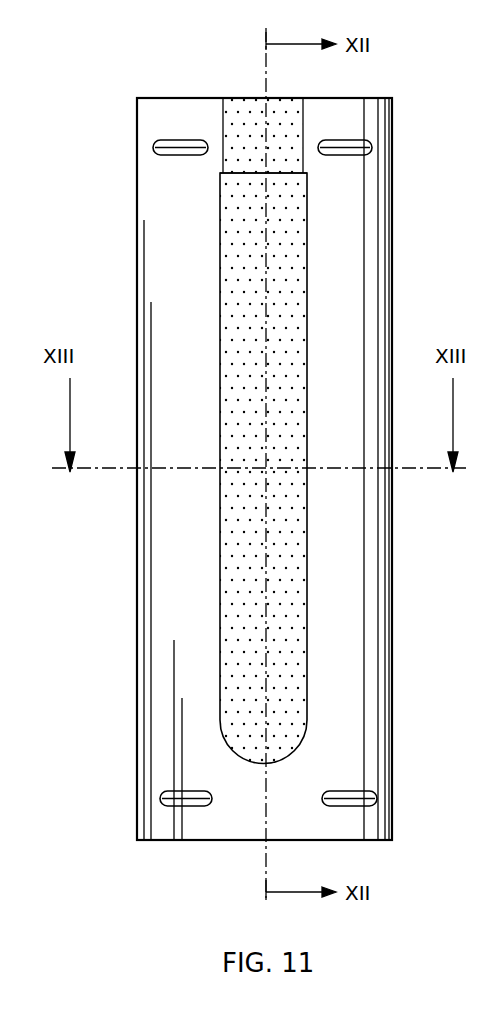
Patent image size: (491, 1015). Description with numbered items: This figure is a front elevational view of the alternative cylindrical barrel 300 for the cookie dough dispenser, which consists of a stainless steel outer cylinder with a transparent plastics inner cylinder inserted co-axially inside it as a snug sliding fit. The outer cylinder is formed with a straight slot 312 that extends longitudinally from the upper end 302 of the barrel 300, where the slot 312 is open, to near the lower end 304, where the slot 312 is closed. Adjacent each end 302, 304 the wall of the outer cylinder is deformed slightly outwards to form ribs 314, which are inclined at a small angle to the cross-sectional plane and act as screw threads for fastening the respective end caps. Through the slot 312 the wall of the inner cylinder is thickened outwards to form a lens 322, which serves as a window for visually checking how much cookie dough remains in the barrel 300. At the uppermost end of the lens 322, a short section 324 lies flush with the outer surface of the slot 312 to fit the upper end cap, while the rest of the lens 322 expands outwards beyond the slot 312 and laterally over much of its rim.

The cylindrical barrel 300 is at (76, 591).
The upper end 302 is at (369, 112).
The lower end 304 is at (213, 827).
The straight slot 312 is at (230, 152).
The ribs 314 is at (155, 148).
The lens 322 is at (300, 300).
The short section 324 is at (275, 115).